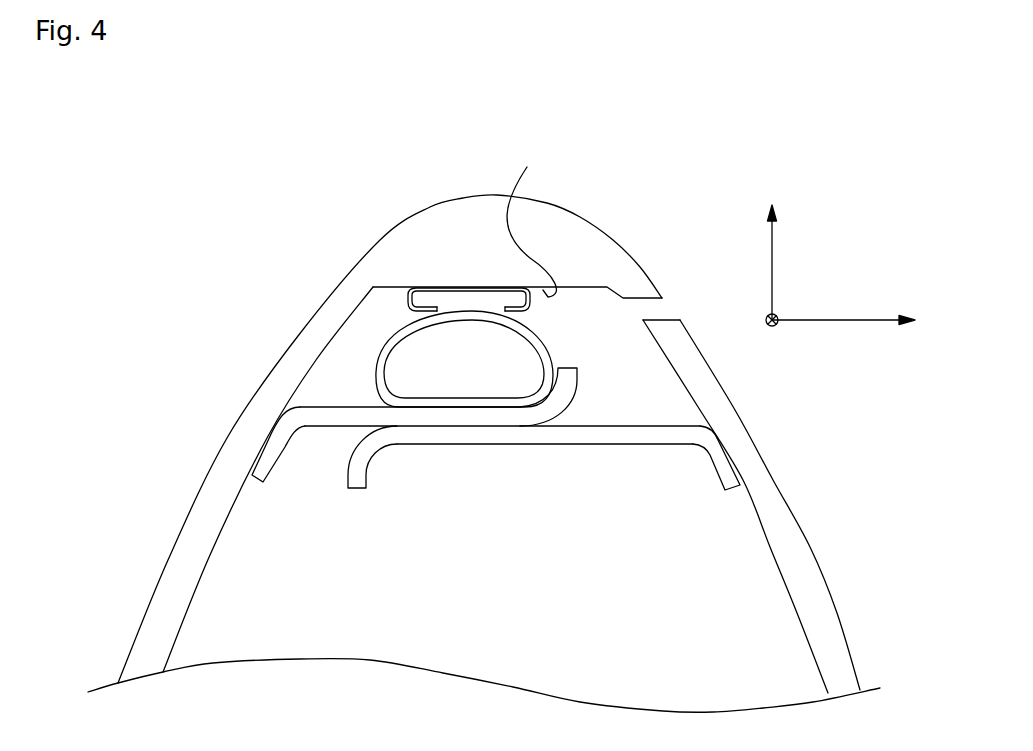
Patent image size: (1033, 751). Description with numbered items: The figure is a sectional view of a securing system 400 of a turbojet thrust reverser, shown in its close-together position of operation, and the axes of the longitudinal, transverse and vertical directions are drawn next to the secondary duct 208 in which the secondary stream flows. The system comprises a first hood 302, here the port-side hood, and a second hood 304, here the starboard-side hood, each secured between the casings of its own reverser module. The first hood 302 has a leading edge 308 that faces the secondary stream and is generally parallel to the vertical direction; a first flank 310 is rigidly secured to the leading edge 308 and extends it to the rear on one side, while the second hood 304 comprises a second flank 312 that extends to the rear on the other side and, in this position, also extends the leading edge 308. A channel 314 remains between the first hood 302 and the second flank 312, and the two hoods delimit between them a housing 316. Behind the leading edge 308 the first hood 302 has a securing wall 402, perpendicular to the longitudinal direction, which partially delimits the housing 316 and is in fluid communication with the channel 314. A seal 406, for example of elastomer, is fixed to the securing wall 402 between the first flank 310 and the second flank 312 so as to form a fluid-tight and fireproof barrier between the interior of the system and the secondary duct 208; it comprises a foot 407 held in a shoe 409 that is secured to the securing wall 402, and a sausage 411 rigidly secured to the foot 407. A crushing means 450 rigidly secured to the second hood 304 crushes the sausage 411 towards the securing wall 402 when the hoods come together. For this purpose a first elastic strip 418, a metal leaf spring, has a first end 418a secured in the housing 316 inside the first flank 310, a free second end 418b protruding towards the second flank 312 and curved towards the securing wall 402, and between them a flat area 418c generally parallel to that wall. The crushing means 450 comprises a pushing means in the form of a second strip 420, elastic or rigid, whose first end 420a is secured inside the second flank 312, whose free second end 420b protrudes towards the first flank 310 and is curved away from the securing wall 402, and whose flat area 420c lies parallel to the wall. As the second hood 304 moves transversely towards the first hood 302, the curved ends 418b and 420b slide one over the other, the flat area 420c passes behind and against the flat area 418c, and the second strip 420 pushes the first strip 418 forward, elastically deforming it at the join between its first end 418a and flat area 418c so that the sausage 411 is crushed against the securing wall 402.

The securing system 400 is at (167, 245).
The first hood 302 is at (156, 337).
The second hood 304 is at (817, 480).
The leading edge 308 is at (493, 197).
The first flank 310 is at (170, 597).
The second flank 312 is at (798, 572).
The channel 314 is at (653, 310).
The housing 316 is at (657, 408).
The secondary duct 208 is at (890, 233).
The securing wall 402 is at (526, 217).
The seal 406 is at (523, 482).
The foot 407 is at (425, 303).
The shoe 409 is at (447, 287).
The sausage 411 is at (377, 362).
The first elastic strip 418 is at (182, 472).
The first end of the first strip 418a is at (273, 452).
The second end of the first strip 418b is at (566, 378).
The flat area of the first strip 418c is at (438, 417).
The second strip 420 is at (624, 586).
The first end of the second strip 420a is at (722, 468).
The second end of the second strip 420b is at (352, 480).
The flat area of the second strip 420c is at (650, 434).
The crushing means 450 is at (701, 594).